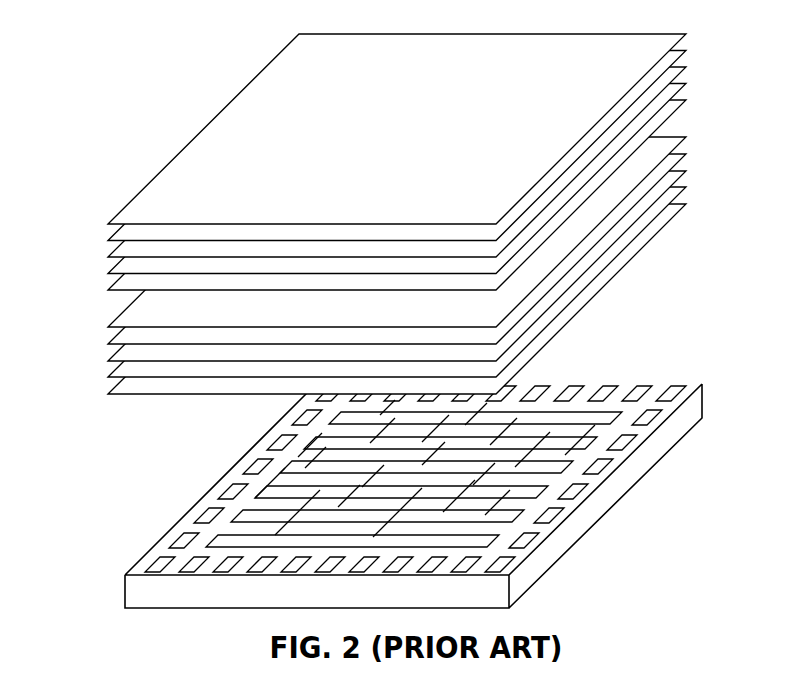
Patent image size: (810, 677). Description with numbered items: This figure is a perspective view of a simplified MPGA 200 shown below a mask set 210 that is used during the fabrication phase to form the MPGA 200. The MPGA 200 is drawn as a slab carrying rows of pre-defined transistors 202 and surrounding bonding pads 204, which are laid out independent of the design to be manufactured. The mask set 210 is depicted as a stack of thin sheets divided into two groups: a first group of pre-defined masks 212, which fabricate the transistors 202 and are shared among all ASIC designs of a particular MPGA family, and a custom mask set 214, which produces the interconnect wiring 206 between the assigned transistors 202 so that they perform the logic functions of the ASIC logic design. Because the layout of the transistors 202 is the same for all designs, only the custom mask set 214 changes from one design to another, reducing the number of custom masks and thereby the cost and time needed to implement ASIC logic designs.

The MPGA 200 is at (382, 484).
The pre-defined transistors 202 is at (480, 536).
The contact pads 204 is at (236, 490).
The interconnect wiring 206 is at (508, 432).
The mask set 210 is at (391, 217).
The pre-defined masks 212 is at (690, 134).
The custom mask set 214 is at (690, 34).